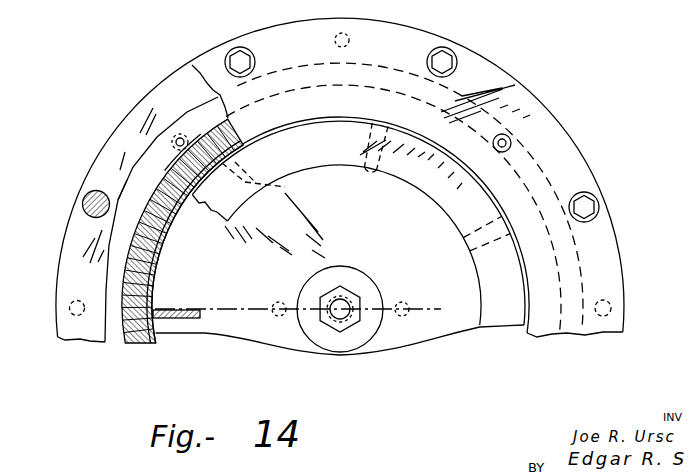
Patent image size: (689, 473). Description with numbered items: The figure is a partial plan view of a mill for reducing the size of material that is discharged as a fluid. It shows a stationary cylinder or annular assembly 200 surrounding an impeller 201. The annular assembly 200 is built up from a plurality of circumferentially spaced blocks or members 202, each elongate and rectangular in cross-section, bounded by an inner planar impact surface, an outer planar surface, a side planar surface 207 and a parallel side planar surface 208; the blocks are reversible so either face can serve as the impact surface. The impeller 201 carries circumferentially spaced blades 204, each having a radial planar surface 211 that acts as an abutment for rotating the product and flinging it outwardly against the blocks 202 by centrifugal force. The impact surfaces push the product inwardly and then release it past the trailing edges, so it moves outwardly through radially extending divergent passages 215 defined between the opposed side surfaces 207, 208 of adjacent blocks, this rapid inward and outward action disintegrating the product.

The stationary cylinder or annular assembly 200 is at (196, 125).
The impeller 201 is at (457, 285).
The blocks or members 202 is at (160, 231).
The blades 204 is at (200, 317).
The side planar surface 207 is at (147, 290).
The side planar surface 208 is at (160, 247).
The radial planar surface 211 is at (179, 313).
The divergent passages 215 is at (173, 157).